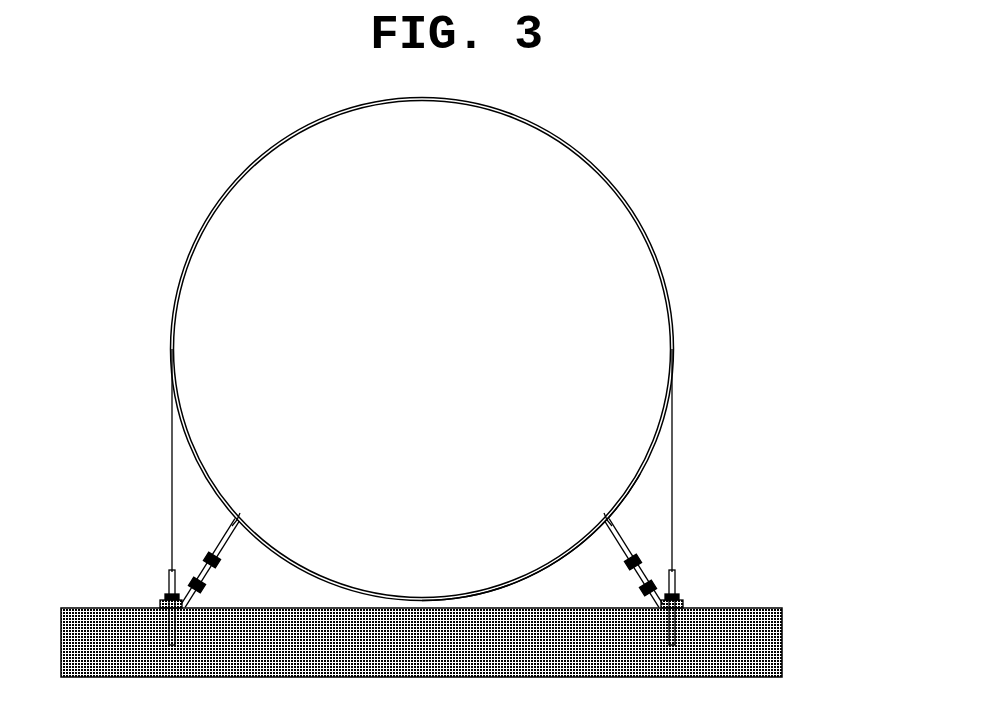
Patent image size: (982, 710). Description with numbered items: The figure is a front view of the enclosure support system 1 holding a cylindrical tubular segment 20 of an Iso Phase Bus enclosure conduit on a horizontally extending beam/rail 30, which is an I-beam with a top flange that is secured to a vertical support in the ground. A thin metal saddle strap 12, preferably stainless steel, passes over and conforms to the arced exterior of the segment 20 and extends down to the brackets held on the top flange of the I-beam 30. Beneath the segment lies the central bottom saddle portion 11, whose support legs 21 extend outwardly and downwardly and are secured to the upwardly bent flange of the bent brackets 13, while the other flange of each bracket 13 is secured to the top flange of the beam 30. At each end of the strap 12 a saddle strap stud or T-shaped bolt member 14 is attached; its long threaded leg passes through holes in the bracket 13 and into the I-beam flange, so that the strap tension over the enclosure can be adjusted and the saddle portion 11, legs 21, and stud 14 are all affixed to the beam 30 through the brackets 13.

The enclosure support system 1 is at (698, 218).
The central bottom saddle portion 11 is at (573, 548).
The saddle strap 12 is at (175, 527).
The outer bottom saddle portion or bracket 13 is at (197, 578).
The saddle strap stud or T-shaped bolt member 14 is at (165, 592).
The tubular segment 20 is at (648, 448).
The support legs 21 is at (227, 533).
The I-beam or beam/rail 30 is at (733, 638).